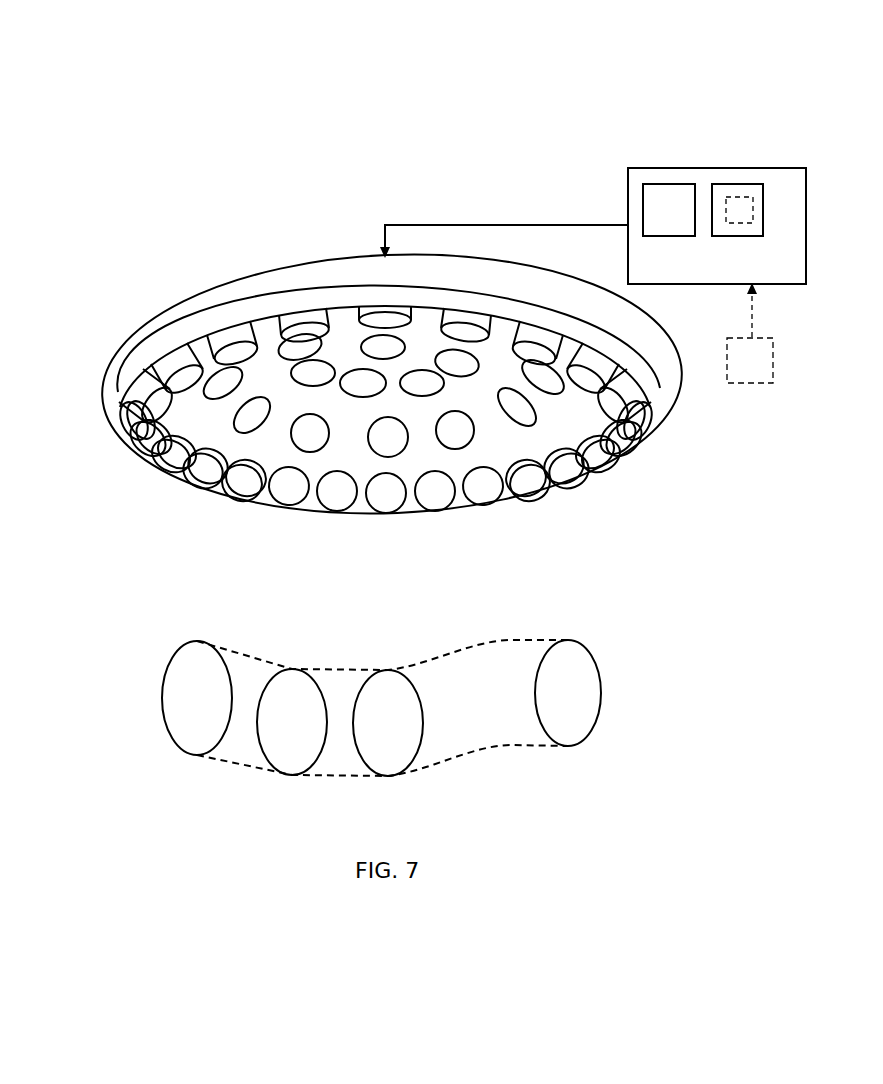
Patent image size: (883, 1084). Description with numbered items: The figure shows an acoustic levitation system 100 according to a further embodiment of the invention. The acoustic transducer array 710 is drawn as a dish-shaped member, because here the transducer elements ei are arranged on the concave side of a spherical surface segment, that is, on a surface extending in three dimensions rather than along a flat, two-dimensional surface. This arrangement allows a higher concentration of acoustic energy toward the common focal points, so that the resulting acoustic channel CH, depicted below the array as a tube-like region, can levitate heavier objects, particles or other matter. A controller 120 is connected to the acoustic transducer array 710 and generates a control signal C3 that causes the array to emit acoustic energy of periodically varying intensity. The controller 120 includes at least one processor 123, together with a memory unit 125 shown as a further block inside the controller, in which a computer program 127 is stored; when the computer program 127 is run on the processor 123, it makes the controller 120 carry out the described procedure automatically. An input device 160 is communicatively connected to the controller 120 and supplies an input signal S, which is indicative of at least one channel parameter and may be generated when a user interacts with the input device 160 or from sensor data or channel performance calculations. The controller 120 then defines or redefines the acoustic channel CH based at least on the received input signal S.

The acoustic levitation system 100 is at (312, 165).
The acoustic transducer array 710 is at (237, 283).
The controller 120 is at (627, 180).
The processor 123 is at (655, 237).
The memory 125 is at (723, 237).
The computer program 127 is at (737, 205).
The input device 160 is at (773, 363).
The control signal C3 is at (504, 241).
The input signal S is at (745, 310).
The acoustic channel CH is at (541, 630).
The transducer elements ei is at (608, 415).